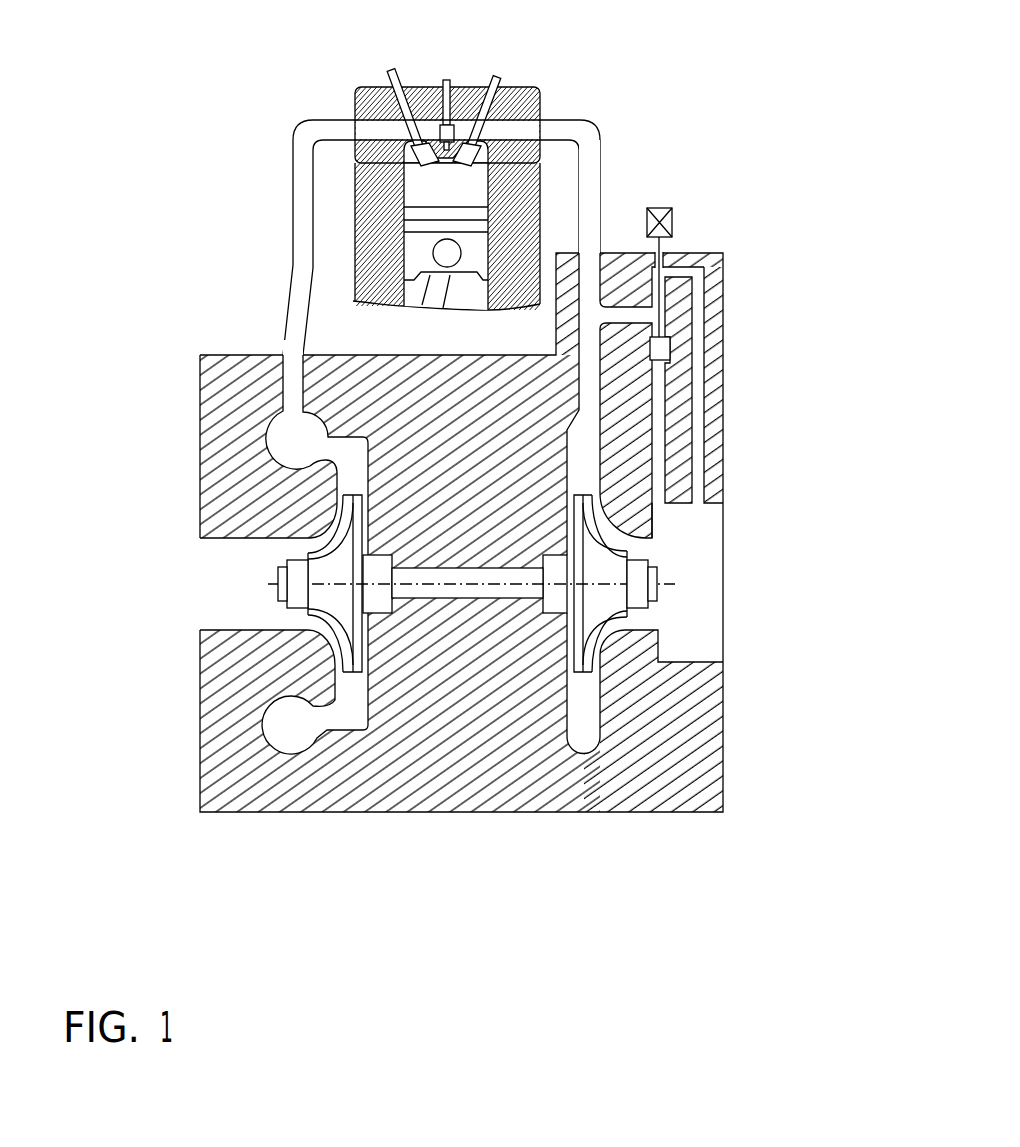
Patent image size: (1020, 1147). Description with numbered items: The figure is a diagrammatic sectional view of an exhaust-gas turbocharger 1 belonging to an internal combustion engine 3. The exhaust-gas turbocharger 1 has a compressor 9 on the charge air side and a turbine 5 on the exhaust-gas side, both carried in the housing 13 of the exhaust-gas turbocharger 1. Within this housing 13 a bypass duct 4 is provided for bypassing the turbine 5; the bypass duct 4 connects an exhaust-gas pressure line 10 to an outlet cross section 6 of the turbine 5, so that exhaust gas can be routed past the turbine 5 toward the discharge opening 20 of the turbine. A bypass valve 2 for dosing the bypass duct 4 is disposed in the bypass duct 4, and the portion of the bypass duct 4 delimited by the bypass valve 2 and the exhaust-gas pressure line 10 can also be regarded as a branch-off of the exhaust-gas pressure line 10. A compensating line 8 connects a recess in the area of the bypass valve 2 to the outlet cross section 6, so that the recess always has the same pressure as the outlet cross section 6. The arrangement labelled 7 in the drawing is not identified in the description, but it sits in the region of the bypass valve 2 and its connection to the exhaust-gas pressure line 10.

The exhaust-gas turbocharger 1 is at (477, 533).
The bypass valve 2 is at (738, 247).
The internal combustion engine 3 is at (286, 98).
The bypass duct 4 is at (628, 318).
The turbine 5 is at (586, 602).
The outlet cross section 6 is at (688, 619).
The bypass valve arrangement 7 is at (703, 187).
The compensating line 8 is at (708, 357).
The compressor 9 is at (330, 598).
The exhaust-gas pressure line 10 is at (592, 174).
The housing 13 is at (502, 780).
The discharge opening 20 is at (662, 550).